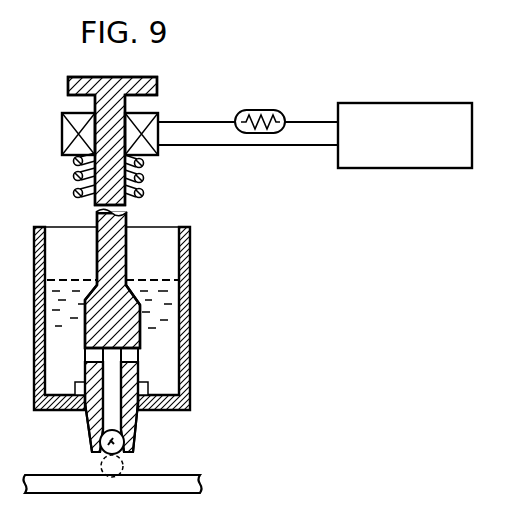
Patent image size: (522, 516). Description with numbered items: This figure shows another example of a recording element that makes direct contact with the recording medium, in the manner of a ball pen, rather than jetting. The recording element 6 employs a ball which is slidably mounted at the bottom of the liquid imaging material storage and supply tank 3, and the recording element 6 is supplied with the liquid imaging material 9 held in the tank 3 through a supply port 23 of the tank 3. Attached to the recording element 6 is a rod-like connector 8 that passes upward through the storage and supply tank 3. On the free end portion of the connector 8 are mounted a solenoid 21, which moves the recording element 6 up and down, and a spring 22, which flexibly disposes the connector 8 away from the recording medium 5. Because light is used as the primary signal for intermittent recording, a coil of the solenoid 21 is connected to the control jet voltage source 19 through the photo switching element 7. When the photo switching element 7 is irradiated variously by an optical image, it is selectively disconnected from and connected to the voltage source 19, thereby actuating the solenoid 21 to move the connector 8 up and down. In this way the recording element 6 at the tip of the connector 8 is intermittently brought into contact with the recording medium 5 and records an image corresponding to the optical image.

The liquid imaging material storage and supply tank 3 is at (40, 322).
The recording medium 5 is at (168, 476).
The recording element 6 is at (92, 430).
The photo switching element 7 is at (243, 110).
The rod-like connector 8 is at (100, 252).
The liquid imaging material 9 is at (56, 276).
The control jet voltage source 19 is at (358, 103).
The solenoid 21 is at (62, 114).
The spring 22 is at (74, 181).
The supply port 23 is at (138, 352).